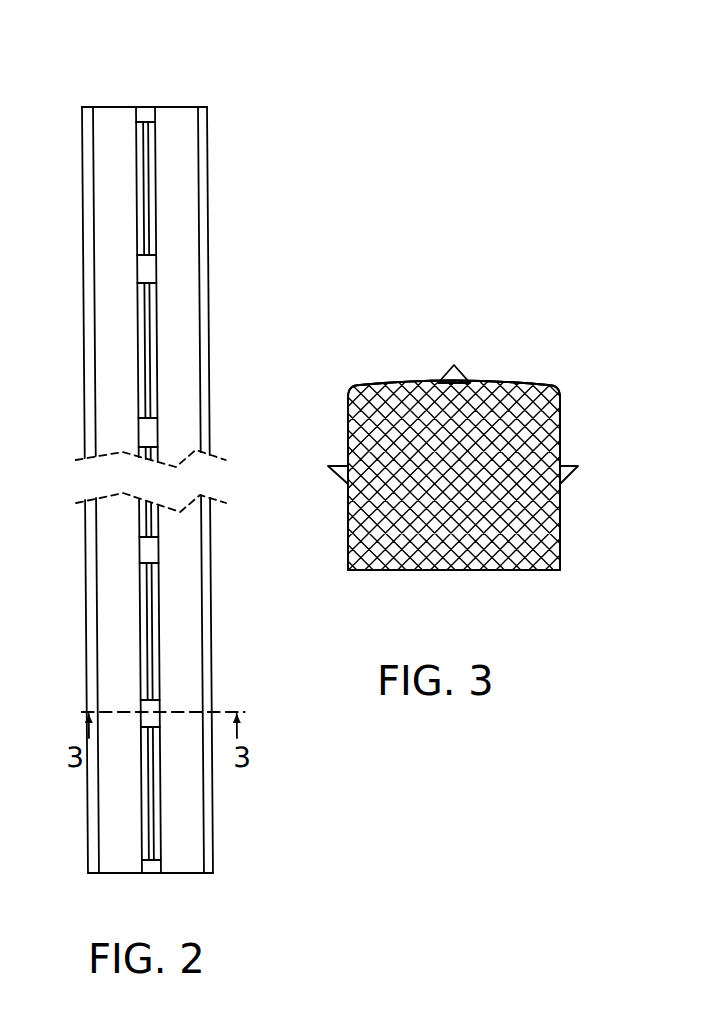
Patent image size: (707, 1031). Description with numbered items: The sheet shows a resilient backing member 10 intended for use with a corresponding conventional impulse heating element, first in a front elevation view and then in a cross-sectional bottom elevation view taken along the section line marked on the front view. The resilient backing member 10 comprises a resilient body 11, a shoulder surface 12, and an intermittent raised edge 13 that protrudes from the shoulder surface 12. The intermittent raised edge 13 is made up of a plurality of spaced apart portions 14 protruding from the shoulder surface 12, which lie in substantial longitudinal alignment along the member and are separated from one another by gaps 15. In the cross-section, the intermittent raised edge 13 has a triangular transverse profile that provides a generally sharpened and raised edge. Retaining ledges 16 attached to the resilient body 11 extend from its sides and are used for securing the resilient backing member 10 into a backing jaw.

In FIG. 2, the resilient backing member 10 is at (150, 57).
In FIG. 3, the resilient backing member 10 is at (548, 254).
In FIG. 3, the resilient body 11 is at (532, 552).
In FIG. 2, the shoulder surface 12 is at (175, 120).
In FIG. 3, the shoulder surface 12 is at (511, 385).
In FIG. 3, the intermittent raised edge 13 is at (445, 360).
In FIG. 2, the spaced apart portions 14 is at (150, 173).
In FIG. 3, the spaced apart portions 14 is at (458, 366).
In FIG. 2, the gaps 15 is at (150, 268).
In FIG. 2, the retaining ledges 16 is at (88, 125).
In FIG. 3, the retaining ledges 16 is at (336, 466).